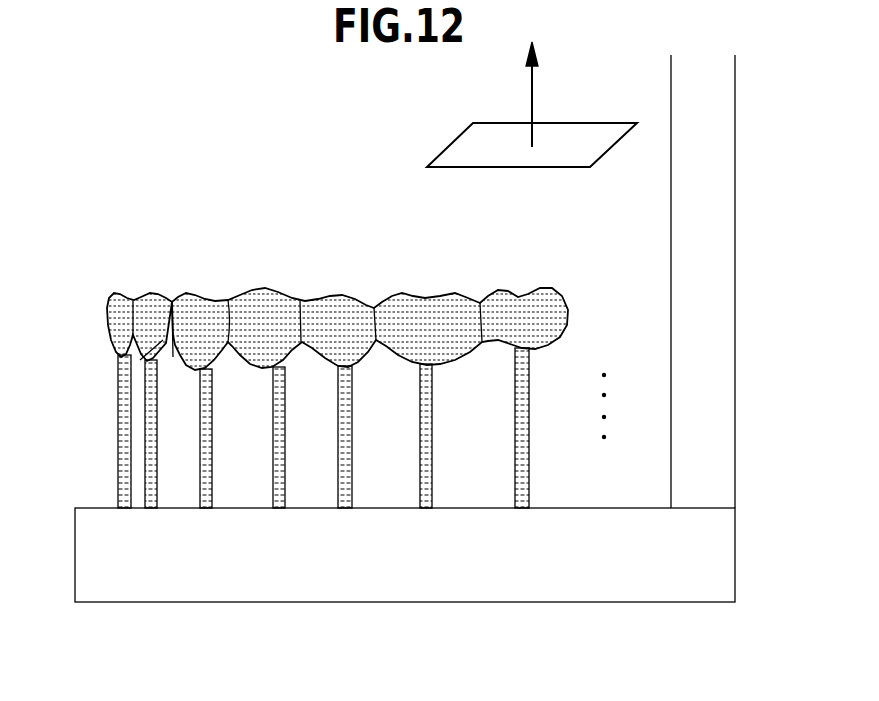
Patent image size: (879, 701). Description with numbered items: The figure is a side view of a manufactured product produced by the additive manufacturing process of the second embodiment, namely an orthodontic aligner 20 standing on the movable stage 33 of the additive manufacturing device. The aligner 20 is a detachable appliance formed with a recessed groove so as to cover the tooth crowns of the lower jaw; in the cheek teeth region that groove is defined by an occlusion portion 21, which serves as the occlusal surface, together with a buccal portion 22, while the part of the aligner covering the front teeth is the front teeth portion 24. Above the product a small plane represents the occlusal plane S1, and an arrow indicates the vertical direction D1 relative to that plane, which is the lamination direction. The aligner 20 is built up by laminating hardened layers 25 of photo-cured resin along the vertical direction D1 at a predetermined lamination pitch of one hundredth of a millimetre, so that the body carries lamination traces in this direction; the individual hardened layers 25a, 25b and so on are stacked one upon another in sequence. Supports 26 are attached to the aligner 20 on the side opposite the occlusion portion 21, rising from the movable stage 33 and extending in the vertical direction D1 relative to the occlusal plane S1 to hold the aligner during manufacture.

The orthodontic aligner 20 is at (323, 276).
The occlusion portion 21 is at (418, 298).
The buccal portion 22 is at (190, 307).
The front teeth portion 24 is at (180, 295).
The hardened layers 25 is at (394, 428).
The hardened layer 25a is at (529, 507).
The hardened layer 25b is at (529, 490).
The supports 26 is at (420, 490).
The movable stage 33 is at (523, 580).
The vertical direction D1 is at (530, 87).
The occlusal plane S1 is at (572, 140).